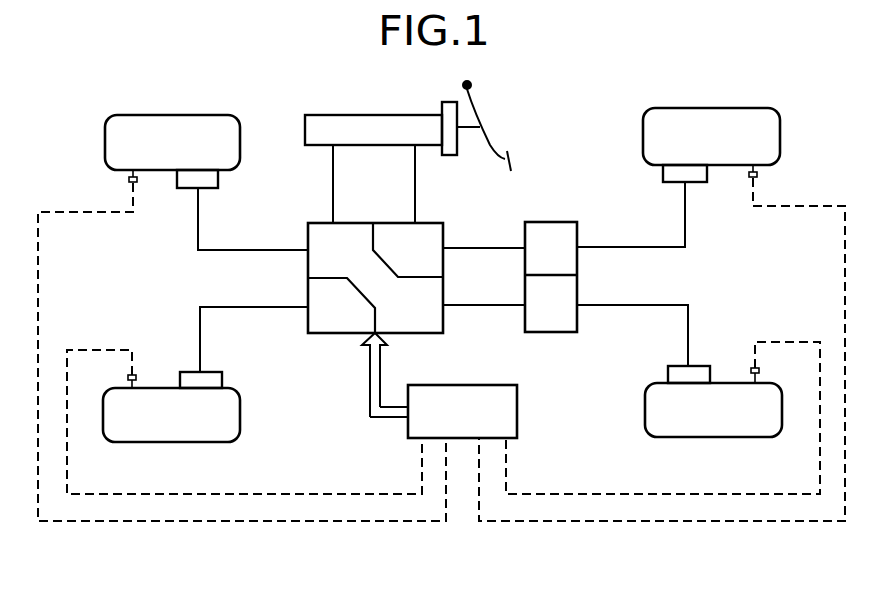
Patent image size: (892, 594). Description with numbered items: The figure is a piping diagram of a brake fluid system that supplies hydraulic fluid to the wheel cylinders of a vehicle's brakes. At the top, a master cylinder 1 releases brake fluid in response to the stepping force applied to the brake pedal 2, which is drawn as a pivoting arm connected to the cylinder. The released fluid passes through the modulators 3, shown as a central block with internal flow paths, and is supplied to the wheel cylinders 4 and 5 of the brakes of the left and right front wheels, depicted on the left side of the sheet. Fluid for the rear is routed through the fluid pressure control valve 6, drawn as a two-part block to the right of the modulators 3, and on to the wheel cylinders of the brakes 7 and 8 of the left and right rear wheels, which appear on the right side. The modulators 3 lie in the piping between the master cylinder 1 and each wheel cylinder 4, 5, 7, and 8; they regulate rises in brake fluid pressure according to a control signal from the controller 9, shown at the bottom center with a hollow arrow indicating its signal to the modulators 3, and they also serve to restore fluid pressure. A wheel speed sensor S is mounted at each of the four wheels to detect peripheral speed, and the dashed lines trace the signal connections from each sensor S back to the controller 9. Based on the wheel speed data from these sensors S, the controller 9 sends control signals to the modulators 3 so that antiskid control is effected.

The master cylinder 1 is at (407, 115).
The brake pedal 2 is at (511, 160).
The modulator 3 is at (310, 237).
The wheel cylinder 4 is at (212, 378).
The wheel cylinder 5 is at (186, 183).
The fluid pressure control valve 6 is at (560, 227).
The rear wheel brake 7 is at (678, 372).
The rear wheel brake 8 is at (697, 178).
The controller 9 is at (517, 412).
The wheel speed sensor S is at (128, 181).